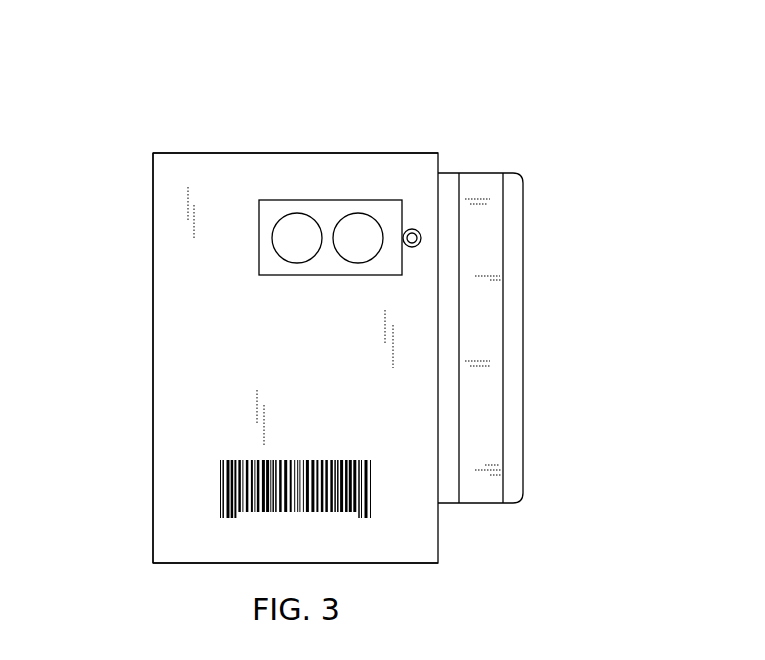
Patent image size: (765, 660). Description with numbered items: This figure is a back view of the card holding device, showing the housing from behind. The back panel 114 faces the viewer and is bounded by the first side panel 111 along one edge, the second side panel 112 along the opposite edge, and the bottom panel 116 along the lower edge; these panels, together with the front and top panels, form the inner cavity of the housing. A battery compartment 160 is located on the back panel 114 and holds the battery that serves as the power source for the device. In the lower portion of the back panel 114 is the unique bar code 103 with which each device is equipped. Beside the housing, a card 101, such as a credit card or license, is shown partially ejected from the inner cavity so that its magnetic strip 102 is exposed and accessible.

The card 101 is at (523, 218).
The magnetic strip 102 is at (487, 183).
The bar code 103 is at (372, 502).
The first side panel 111 is at (210, 563).
The second side panel 112 is at (387, 150).
The back panel 114 is at (190, 357).
The bottom panel 116 is at (152, 175).
The battery compartment 160 is at (322, 200).